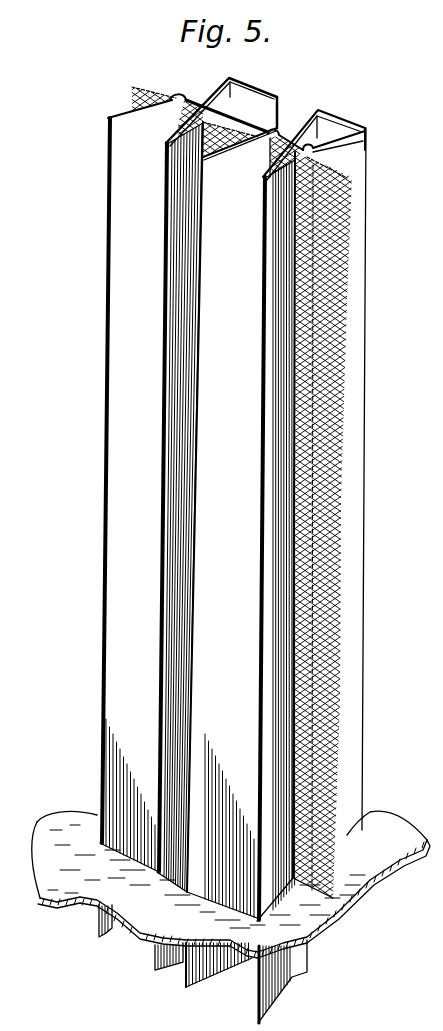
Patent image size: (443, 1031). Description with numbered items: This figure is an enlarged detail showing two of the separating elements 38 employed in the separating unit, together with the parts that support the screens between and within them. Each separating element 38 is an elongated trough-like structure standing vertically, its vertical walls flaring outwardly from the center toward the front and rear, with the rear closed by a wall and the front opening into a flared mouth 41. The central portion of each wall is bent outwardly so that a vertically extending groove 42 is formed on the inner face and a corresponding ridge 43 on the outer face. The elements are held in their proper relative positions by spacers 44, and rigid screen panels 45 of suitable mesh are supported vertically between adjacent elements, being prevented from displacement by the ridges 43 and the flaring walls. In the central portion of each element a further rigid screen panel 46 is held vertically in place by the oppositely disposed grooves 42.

The separating element 38 is at (123, 173).
The flared mouth 41 is at (133, 649).
The groove 42 is at (280, 132).
The ridge 43 is at (363, 141).
The spacer 44 is at (383, 840).
The screen panel 45 is at (151, 94).
The screen panel 46 is at (203, 100).